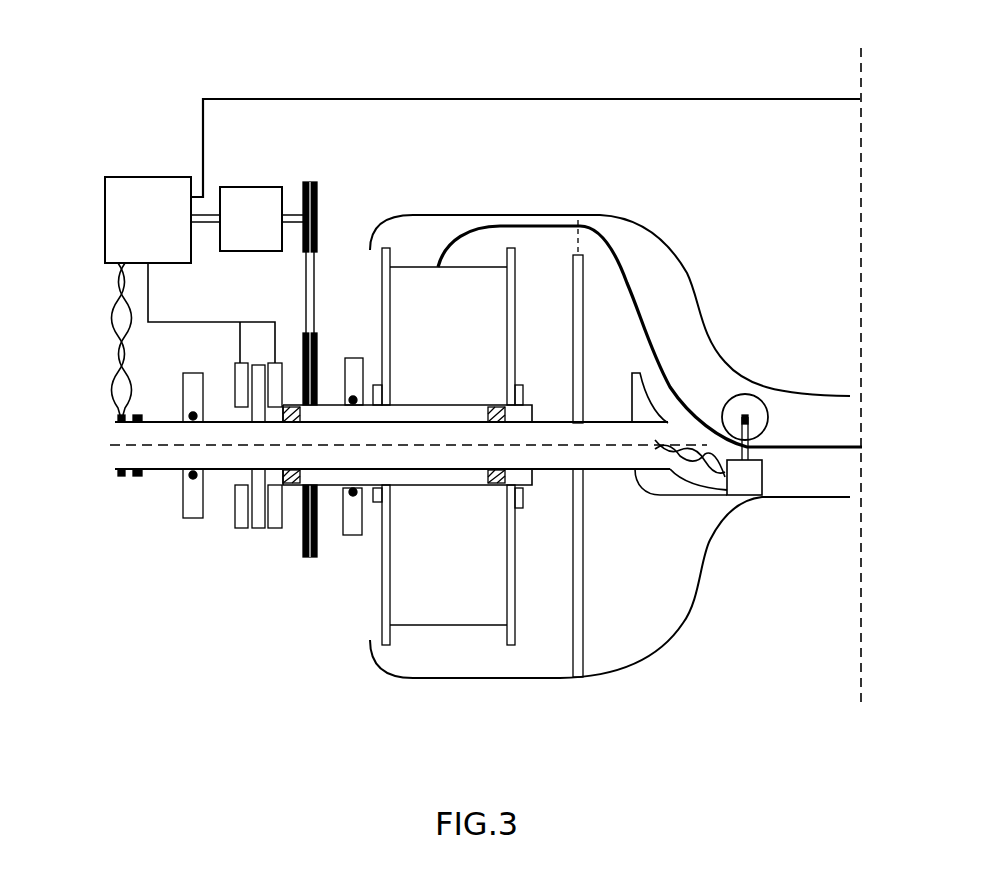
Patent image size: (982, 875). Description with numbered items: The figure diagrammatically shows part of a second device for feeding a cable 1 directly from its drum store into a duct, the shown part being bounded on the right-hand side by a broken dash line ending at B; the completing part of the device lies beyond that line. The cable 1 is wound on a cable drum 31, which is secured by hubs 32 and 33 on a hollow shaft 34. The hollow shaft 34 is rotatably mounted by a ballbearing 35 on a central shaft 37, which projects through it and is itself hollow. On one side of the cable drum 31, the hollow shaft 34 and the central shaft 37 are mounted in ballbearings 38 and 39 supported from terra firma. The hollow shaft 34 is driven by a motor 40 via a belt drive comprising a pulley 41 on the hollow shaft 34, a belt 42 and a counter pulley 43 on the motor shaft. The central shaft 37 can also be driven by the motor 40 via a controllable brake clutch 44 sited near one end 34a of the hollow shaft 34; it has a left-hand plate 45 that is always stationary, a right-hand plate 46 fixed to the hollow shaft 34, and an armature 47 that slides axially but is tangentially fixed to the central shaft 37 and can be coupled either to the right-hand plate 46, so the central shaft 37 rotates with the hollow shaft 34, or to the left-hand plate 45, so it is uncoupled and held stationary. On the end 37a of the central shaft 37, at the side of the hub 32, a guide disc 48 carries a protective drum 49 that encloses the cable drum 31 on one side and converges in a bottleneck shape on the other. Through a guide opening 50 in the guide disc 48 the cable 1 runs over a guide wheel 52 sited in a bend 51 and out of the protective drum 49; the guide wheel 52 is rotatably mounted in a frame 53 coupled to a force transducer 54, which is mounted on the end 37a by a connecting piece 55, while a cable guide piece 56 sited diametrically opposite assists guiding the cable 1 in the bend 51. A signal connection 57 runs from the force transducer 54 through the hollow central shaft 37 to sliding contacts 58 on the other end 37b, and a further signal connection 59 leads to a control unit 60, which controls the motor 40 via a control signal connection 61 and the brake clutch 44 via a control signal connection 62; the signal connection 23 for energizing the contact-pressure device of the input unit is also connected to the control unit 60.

The cable 1 is at (533, 236).
The signal connection 23 is at (547, 98).
The cable drum 31 is at (517, 594).
The hub 32 is at (518, 508).
The hub 33 is at (378, 503).
The hollow shaft 34 is at (330, 403).
The end of hollow shaft 34a is at (277, 409).
The ballbearing 35 is at (490, 489).
The central shaft 37 is at (420, 423).
The end of central shaft 37a is at (615, 471).
The other end of central shaft 37b is at (167, 470).
The ballbearing 38 is at (355, 357).
The ballbearing 39 is at (190, 508).
The motor 40 is at (245, 200).
The pulley 41 is at (318, 537).
The belt 42 is at (303, 289).
The counter pulley 43 is at (318, 204).
The brake clutch 44 is at (255, 568).
The left-hand plate 45 is at (240, 529).
The right-hand plate 46 is at (273, 529).
The armature 47 is at (263, 529).
The guide disc 48 is at (582, 285).
The protective drum 49 is at (457, 214).
The guide opening 50 is at (590, 231).
The bend 51 is at (700, 395).
The guide wheel 52 is at (753, 400).
The frame 53 is at (752, 435).
The force transducer 54 is at (763, 485).
The connecting piece 55 is at (660, 493).
The cable guide piece 56 is at (637, 400).
The signal connection 57 is at (447, 451).
The sliding contacts 58 is at (122, 481).
The signal connection 59 is at (116, 338).
The control unit 60 is at (132, 193).
The control signal connection 61 is at (214, 224).
The control signal connection 62 is at (172, 324).
The broken dash line A- B is at (861, 376).